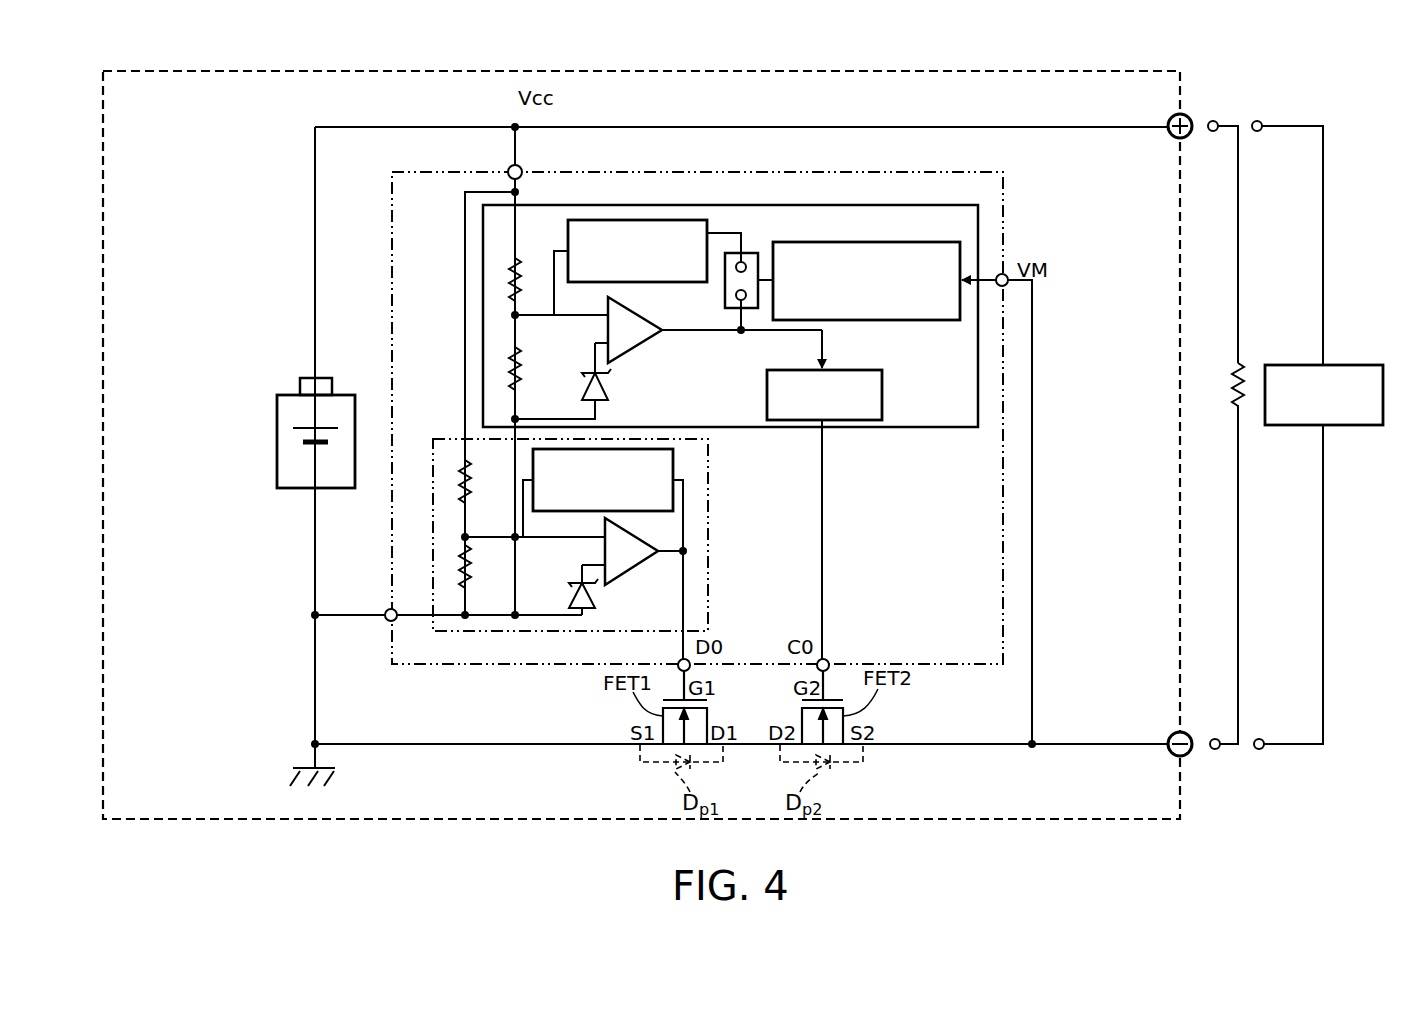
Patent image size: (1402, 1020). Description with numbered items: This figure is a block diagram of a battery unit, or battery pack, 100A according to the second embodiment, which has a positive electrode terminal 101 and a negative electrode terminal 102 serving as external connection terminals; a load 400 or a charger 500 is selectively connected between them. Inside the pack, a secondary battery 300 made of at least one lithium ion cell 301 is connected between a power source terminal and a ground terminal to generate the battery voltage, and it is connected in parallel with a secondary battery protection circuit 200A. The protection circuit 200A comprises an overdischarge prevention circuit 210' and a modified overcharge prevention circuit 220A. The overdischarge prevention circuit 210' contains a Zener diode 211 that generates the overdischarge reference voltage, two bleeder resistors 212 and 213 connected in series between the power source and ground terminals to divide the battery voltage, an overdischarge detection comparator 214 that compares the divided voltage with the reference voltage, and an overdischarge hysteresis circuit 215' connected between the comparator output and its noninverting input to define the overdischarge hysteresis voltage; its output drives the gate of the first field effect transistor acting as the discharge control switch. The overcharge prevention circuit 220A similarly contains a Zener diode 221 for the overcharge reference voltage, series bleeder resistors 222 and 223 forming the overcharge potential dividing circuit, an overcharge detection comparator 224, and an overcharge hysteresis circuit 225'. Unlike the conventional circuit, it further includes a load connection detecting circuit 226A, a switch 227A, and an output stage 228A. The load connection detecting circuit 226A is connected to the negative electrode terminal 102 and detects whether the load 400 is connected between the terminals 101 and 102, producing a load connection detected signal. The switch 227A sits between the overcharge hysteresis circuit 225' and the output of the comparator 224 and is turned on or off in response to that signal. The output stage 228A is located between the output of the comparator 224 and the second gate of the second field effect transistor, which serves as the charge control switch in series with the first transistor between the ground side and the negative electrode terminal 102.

The battery unit 100A is at (745, 71).
The positive electrode terminal 101 is at (1190, 115).
The negative electrode terminal 102 is at (1188, 755).
The secondary battery protection circuit 200A is at (1003, 176).
The overdischarge prevention circuit 210' is at (525, 590).
The Zener diode 211 is at (598, 592).
The bleeder resistor 212 is at (458, 493).
The bleeder resistor 213 is at (458, 580).
The overdischarge detection comparator 214 is at (602, 554).
The overdischarge hysteresis circuit 215' is at (656, 500).
The overcharge prevention circuit 220A is at (722, 205).
The Zener diode 221 is at (610, 392).
The bleeder resistor 222 is at (508, 278).
The bleeder resistor 223 is at (508, 365).
The overcharge detection comparator 224 is at (642, 348).
The overcharge hysteresis circuit 225' is at (632, 224).
The load connection detecting circuit 226A is at (878, 242).
The switch 227A is at (725, 291).
The output stage 228A is at (882, 396).
The secondary battery 300 is at (277, 412).
The lithium ion cell 301 is at (306, 445).
The load 400 is at (1235, 395).
The charger 500 is at (1360, 365).